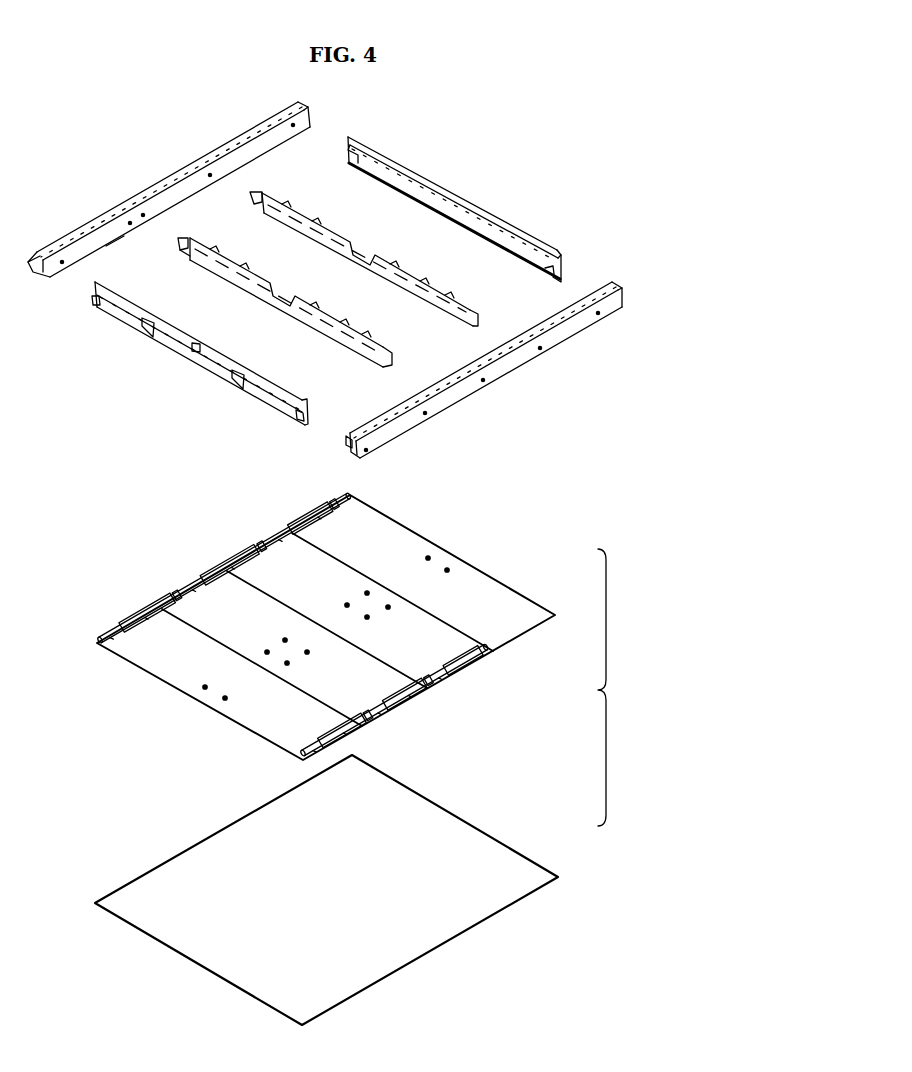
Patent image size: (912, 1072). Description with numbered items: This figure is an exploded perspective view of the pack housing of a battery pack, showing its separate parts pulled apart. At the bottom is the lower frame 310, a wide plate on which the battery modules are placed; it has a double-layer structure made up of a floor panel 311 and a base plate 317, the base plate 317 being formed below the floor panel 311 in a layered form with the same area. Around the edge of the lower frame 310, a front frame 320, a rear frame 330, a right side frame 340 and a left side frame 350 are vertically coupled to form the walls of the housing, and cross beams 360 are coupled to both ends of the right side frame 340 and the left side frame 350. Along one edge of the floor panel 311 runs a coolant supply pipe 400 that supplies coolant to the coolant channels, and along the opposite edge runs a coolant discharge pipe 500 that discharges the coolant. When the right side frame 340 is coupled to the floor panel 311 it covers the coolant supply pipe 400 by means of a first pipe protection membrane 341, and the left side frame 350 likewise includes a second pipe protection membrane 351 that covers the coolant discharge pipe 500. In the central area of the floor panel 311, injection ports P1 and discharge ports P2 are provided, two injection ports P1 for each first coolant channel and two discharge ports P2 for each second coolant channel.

The lower frame 310 is at (376, 757).
The floor panel 311 is at (547, 590).
The base plate 317 is at (550, 853).
The front frame 320 is at (187, 365).
The rear frame 330 is at (460, 192).
The right side frame 340 is at (500, 385).
The first pipe protection membrane 341 is at (347, 440).
The left side frame 350 is at (153, 178).
The second pipe protection membrane 351 is at (116, 237).
The cross beam 360 is at (220, 247).
The coolant supply pipe 400 is at (428, 697).
The coolant discharge pipe 500 is at (207, 567).
The injection port P1 is at (205, 687).
The discharge port P2 is at (267, 652).